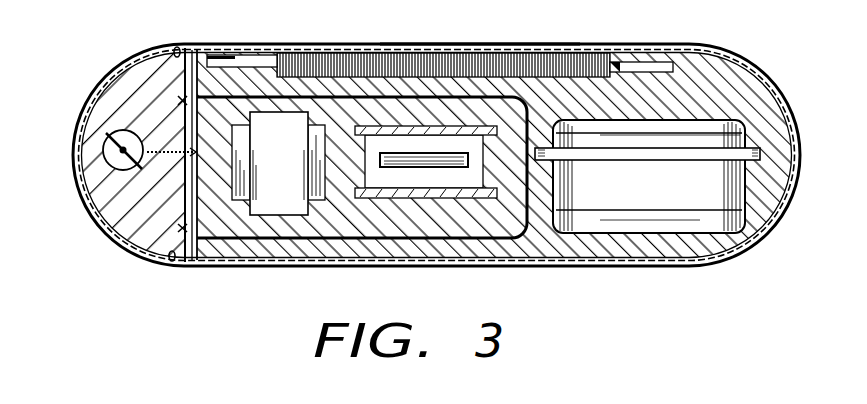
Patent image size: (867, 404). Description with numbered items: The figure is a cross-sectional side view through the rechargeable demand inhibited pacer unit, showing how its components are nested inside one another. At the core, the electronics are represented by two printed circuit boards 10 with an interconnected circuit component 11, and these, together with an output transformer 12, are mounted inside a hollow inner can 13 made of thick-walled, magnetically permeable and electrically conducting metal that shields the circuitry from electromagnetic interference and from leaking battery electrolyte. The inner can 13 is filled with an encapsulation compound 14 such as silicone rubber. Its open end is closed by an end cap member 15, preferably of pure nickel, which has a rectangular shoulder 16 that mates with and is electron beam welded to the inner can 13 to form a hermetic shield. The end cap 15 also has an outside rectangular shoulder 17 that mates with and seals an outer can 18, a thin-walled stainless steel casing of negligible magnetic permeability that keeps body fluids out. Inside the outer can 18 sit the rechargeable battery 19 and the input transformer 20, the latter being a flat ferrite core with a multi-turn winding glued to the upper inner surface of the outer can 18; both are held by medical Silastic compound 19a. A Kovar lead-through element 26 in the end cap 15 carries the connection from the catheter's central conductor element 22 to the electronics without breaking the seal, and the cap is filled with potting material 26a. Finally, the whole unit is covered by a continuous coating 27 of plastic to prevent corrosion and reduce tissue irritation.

The printed circuit boards 10 is at (416, 127).
The circuit component 11 is at (380, 162).
The output transformer 12 is at (289, 147).
The inner can 13 is at (268, 88).
The encapsulation compound 14 is at (384, 223).
The end cap member 15 is at (92, 203).
The rectangular shoulder 16 is at (181, 100).
The outside rectangular shoulder 17 is at (177, 47).
The outer can 18 is at (622, 256).
The rechargeable battery 19 is at (692, 195).
The medical Silastic compound 19a is at (816, 71).
The input transformer 20 is at (530, 51).
The central conductor element 22 is at (123, 150).
The lead-through element 26 is at (187, 157).
The potting material 26a is at (105, 98).
The continuous coating 27 is at (482, 45).